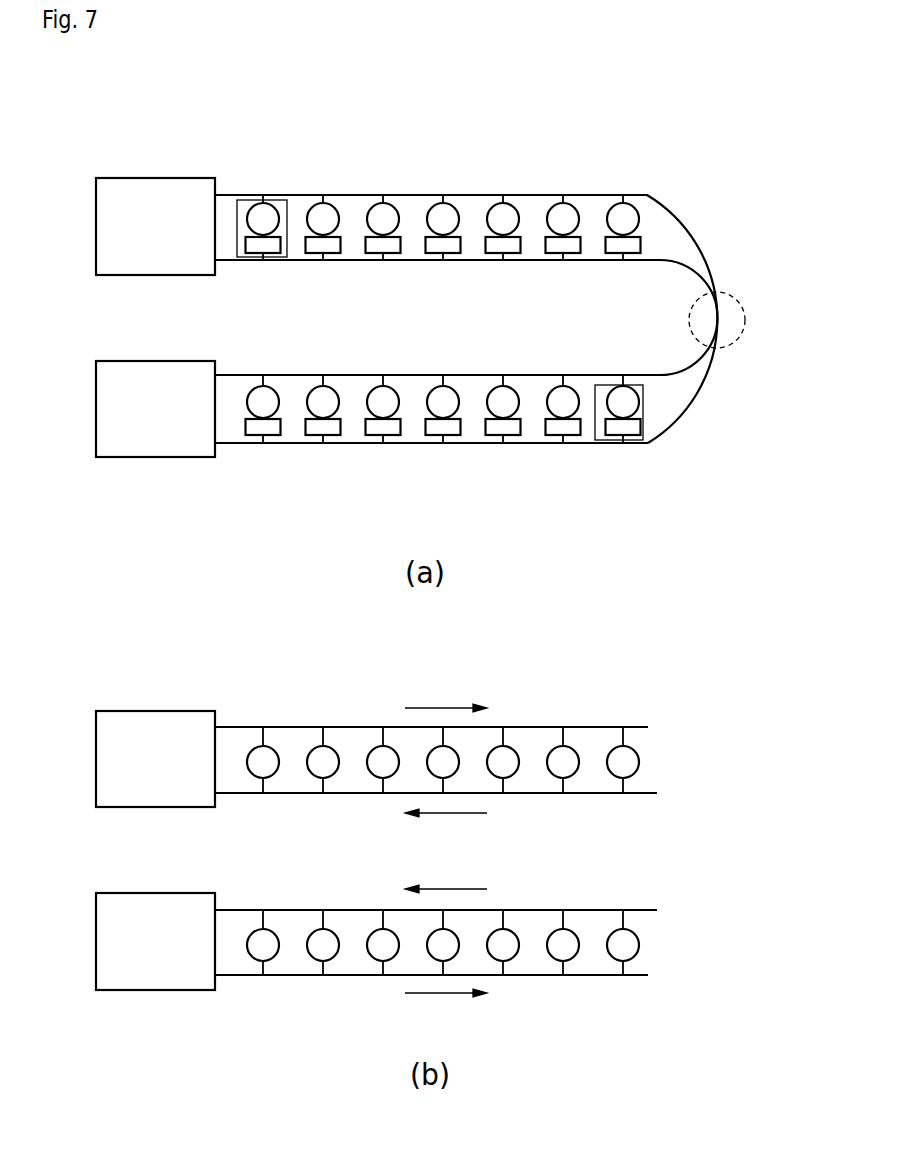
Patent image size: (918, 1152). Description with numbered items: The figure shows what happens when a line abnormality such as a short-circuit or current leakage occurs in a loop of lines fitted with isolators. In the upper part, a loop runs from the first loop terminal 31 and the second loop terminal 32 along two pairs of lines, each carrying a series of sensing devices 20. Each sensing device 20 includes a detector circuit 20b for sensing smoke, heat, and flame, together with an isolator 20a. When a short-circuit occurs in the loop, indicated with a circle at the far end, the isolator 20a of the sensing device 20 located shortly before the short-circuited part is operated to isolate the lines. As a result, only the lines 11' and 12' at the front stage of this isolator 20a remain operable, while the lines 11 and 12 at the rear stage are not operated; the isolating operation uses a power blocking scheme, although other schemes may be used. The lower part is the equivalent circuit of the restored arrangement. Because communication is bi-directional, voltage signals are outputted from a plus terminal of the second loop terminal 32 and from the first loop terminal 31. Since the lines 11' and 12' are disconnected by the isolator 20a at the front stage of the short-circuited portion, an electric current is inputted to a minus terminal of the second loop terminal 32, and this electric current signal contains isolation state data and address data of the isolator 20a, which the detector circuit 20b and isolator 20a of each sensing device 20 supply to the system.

The line 11 is at (480, 454).
The line 12 is at (497, 555).
The line 11' is at (431, 750).
The line 12' is at (437, 603).
The sensing device 20 is at (243, 262).
The isolator 20a is at (273, 245).
The detector circuit 20b is at (270, 213).
The loop 1-A terminal 31 is at (158, 178).
The loop 1-B terminal 32 is at (152, 457).